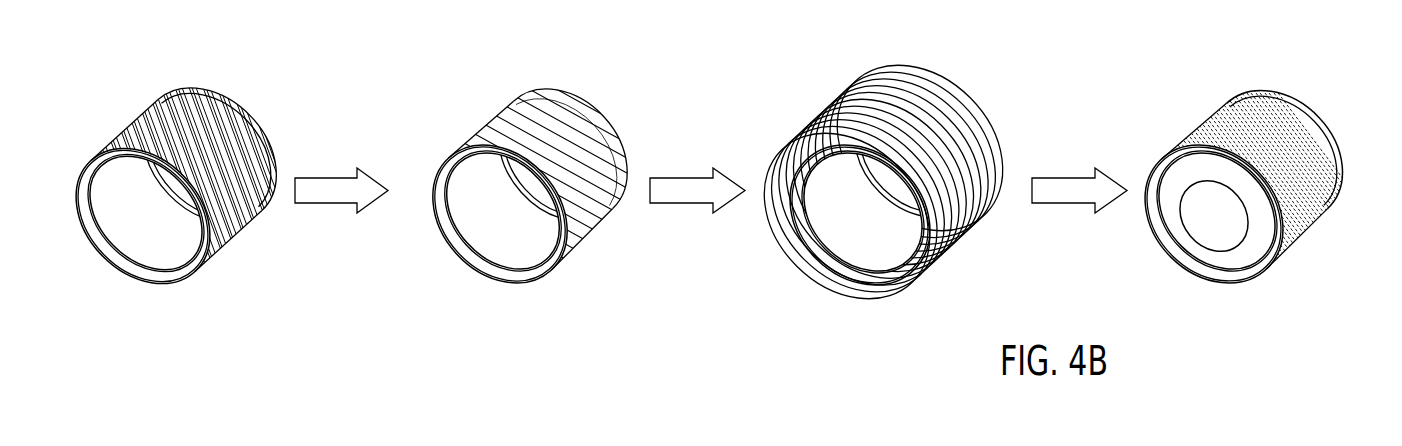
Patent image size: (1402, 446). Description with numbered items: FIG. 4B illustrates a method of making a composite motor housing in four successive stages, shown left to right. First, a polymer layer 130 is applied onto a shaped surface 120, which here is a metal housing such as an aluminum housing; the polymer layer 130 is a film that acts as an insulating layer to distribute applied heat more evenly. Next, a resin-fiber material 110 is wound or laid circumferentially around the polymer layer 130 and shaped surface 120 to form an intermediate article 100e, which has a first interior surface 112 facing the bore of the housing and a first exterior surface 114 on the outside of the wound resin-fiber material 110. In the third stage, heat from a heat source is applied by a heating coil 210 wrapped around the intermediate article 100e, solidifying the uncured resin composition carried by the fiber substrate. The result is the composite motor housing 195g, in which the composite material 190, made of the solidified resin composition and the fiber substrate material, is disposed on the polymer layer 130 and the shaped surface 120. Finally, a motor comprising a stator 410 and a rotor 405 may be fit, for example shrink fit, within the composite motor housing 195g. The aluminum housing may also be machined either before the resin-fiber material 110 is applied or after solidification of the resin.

The polymer layer 130 is at (147, 132).
The shaped surface 120 is at (97, 240).
The intermediate article 100e is at (462, 56).
The resin-fiber material 110 is at (503, 120).
The first exterior surface 114 is at (583, 117).
The first interior surface 112 is at (477, 230).
The heating coil 210 is at (852, 103).
The composite motor housing 195g is at (1307, 86).
The composite material 190 is at (1220, 118).
The rotor 405 is at (1183, 167).
The stator 410 is at (1220, 232).